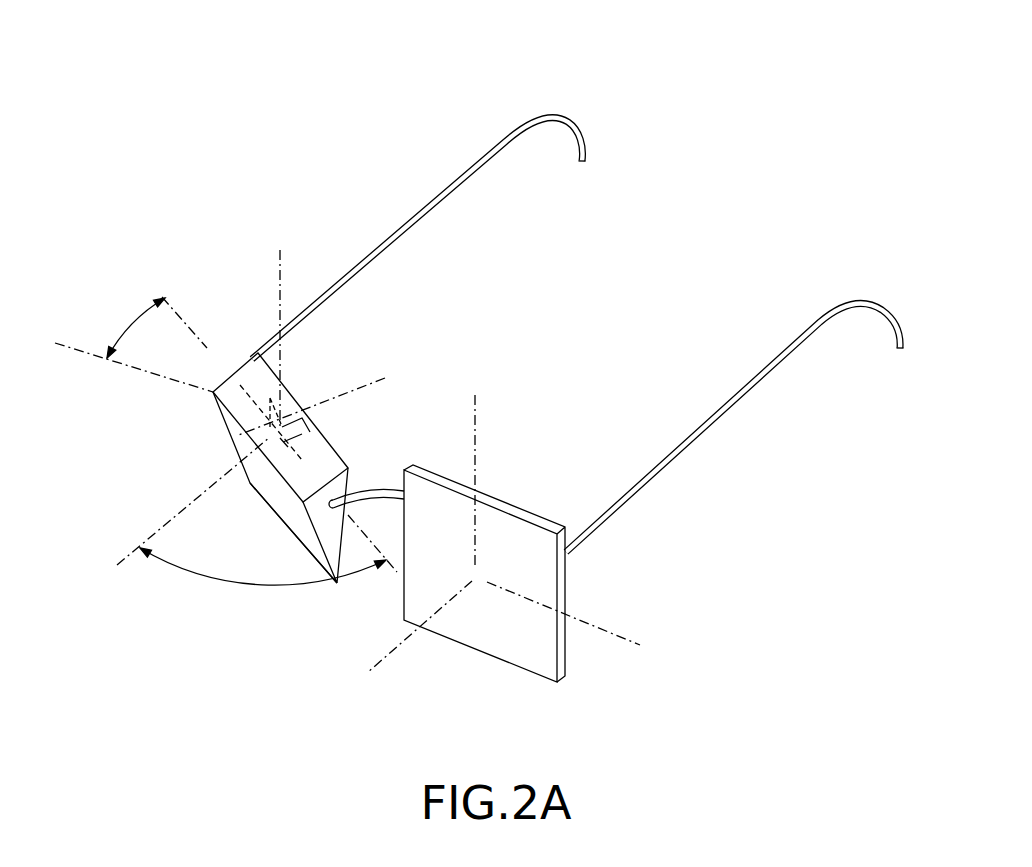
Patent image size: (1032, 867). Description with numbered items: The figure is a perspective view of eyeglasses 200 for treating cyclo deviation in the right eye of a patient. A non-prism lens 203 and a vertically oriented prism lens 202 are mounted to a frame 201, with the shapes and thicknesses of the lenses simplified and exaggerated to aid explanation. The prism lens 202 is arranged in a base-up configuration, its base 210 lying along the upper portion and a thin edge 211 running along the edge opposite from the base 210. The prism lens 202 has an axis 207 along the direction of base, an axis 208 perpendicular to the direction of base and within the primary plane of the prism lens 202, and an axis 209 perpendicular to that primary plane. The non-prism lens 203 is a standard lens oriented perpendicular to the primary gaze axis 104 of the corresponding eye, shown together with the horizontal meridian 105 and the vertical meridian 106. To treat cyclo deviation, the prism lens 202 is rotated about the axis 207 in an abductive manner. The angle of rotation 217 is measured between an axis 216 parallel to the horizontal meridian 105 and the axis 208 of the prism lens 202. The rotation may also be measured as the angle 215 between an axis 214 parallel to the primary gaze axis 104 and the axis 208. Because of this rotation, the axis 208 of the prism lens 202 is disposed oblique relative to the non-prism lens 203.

The eyeglasses 200 is at (275, 125).
The frame 201 is at (503, 142).
The prism lens 202 is at (270, 350).
The non-prism lens 203 is at (551, 515).
The primary gaze axis 104 is at (380, 663).
The horizontal meridian 105 is at (624, 635).
The vertical meridian 106 is at (476, 420).
The axis along the direction of base 207 is at (282, 263).
The axis perpendicular to the direction of base 208 is at (177, 312).
The axis perpendicular to the primary plane 209 is at (393, 352).
The base of prism lens 210 is at (293, 453).
The thin edge 211 is at (307, 548).
The axis parallel to the primary gaze axis 214 is at (160, 520).
The angle 215 is at (232, 583).
The axis parallel to the horizontal meridian 216 is at (137, 369).
The angle of rotation 217 is at (133, 320).